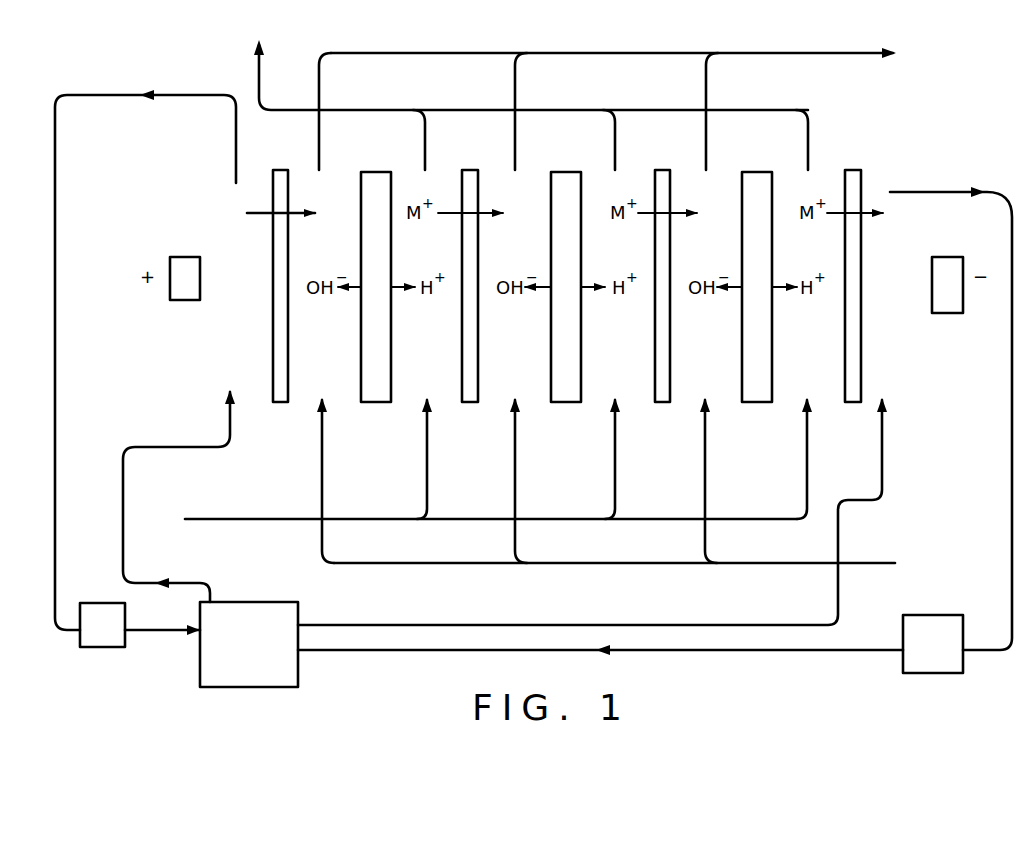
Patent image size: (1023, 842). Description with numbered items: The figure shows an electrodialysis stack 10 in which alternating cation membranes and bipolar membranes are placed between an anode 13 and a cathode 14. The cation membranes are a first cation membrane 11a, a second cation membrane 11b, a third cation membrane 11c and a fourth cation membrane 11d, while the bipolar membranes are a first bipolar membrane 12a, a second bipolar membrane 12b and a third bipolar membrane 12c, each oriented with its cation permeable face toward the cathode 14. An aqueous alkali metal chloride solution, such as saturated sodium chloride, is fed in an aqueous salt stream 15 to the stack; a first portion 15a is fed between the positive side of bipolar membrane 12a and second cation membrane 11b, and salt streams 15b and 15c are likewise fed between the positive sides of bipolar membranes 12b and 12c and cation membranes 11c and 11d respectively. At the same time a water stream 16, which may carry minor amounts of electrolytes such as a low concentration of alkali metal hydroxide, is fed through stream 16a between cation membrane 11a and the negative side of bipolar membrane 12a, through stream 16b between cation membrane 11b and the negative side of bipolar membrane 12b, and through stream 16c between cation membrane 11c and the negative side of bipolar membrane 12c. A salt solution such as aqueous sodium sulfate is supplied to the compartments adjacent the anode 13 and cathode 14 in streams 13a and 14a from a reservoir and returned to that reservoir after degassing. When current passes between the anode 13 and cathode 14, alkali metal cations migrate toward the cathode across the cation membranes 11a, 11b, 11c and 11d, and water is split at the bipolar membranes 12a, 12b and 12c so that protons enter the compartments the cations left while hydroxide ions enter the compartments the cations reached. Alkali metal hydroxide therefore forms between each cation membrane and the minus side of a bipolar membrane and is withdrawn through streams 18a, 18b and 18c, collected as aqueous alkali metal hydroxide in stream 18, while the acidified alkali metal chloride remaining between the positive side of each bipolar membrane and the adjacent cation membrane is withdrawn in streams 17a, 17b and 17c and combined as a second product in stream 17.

The electrodialysis stack 10 is at (211, 195).
The first cation membrane 11a is at (282, 170).
The second cation membrane 11b is at (468, 170).
The third cation membrane 11c is at (664, 170).
The fourth cation membrane 11d is at (855, 170).
The first bipolar membrane 12a is at (367, 172).
The second bipolar membrane 12b is at (568, 172).
The third bipolar membrane 12c is at (759, 172).
The anode 13 is at (185, 300).
The anode compartment salt solution stream 13a is at (155, 447).
The cathode 14 is at (949, 313).
The cathode compartment salt solution stream 14a is at (882, 476).
The aqueous salt stream 15 is at (255, 519).
The first portion of aqueous salt stream 15a is at (427, 476).
The aqueous alkali metal salt stream 15b is at (615, 476).
The aqueous alkali metal salt stream 15c is at (807, 476).
The water stream 16 is at (865, 563).
The water stream portion 16a is at (322, 476).
The water stream portion 16b is at (515, 476).
The water stream portion 16c is at (705, 476).
The acidified alkali metal chloride product stream 17 is at (259, 74).
The acidified alkali metal chloride stream 17a is at (425, 127).
The acidified alkali metal chloride stream 17b is at (615, 127).
The acidified alkali metal chloride stream 17c is at (808, 127).
The aqueous alkali metal hydroxide stream 18 is at (793, 53).
The alkali metal hydroxide withdrawal stream 18a is at (319, 80).
The alkali metal hydroxide withdrawal stream 18b is at (515, 80).
The alkali metal hydroxide withdrawal stream 18c is at (706, 80).